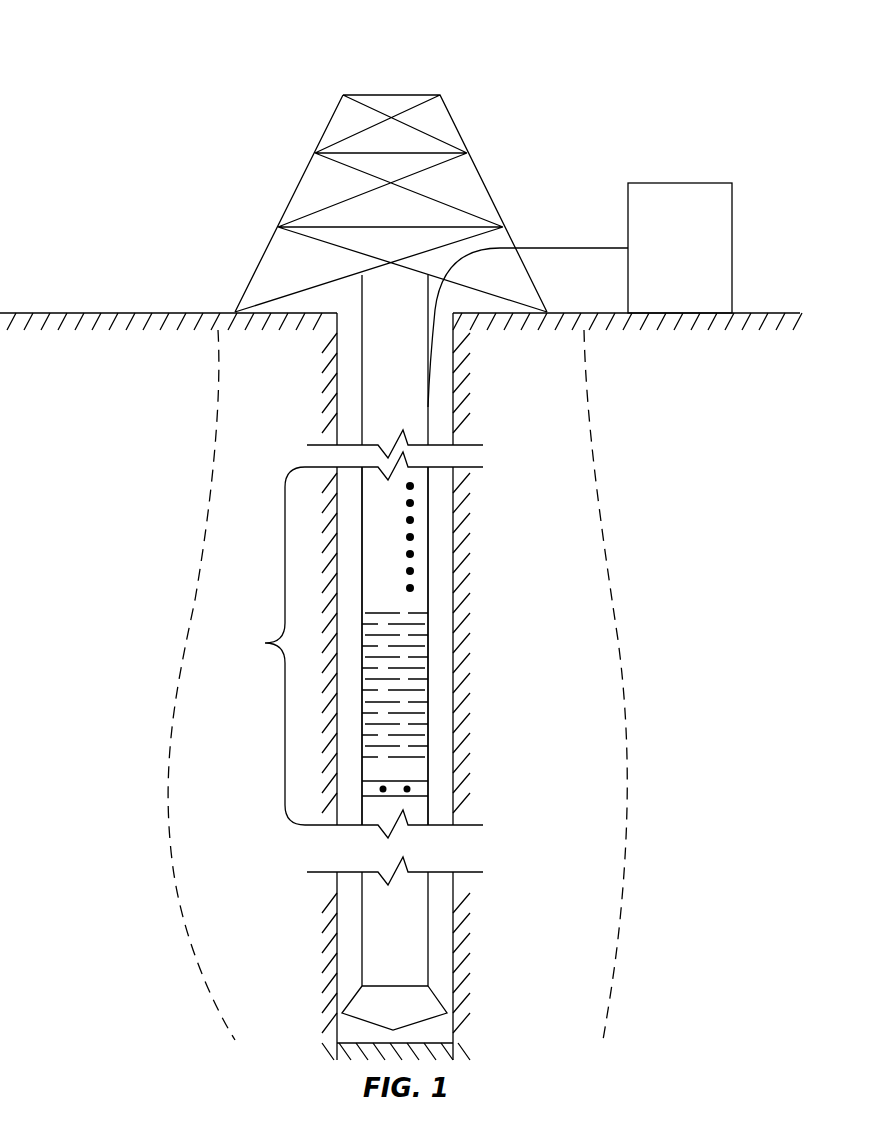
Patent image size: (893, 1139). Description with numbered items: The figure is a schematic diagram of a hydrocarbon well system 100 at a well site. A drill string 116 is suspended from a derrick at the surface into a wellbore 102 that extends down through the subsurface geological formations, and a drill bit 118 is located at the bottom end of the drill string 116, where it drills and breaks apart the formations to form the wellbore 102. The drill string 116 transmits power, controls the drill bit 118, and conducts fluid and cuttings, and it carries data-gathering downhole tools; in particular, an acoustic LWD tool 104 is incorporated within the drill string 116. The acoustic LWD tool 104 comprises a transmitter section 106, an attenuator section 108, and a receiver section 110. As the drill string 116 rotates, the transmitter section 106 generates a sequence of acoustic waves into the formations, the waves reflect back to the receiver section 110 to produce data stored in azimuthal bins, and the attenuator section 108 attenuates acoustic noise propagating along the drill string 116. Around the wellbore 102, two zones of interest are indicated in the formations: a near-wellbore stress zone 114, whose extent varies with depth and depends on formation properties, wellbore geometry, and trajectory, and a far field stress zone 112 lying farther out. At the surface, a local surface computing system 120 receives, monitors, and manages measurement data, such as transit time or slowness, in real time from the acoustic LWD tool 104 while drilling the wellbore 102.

The hydrocarbon well system 100 is at (117, 55).
The wellbore 102 is at (457, 940).
The acoustic LWD tool 104 is at (326, 646).
The transmitter section 106 is at (428, 788).
The attenuator section 108 is at (428, 700).
The receiver section 110 is at (428, 532).
The far field stress zone 112 is at (88, 568).
The near-wellbore stress zone 114 is at (242, 880).
The drill string 116 is at (428, 407).
The drill bit 118 is at (447, 1013).
The local surface computing system 120 is at (673, 183).